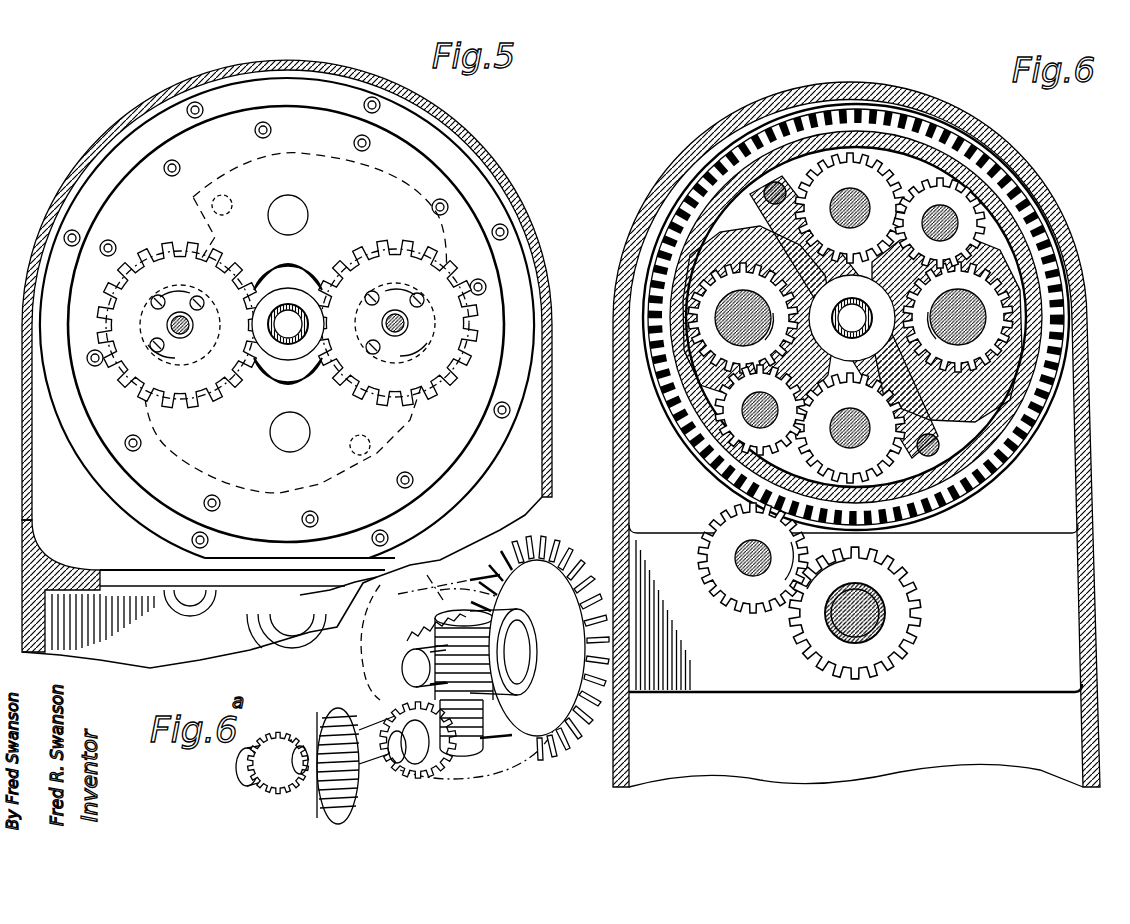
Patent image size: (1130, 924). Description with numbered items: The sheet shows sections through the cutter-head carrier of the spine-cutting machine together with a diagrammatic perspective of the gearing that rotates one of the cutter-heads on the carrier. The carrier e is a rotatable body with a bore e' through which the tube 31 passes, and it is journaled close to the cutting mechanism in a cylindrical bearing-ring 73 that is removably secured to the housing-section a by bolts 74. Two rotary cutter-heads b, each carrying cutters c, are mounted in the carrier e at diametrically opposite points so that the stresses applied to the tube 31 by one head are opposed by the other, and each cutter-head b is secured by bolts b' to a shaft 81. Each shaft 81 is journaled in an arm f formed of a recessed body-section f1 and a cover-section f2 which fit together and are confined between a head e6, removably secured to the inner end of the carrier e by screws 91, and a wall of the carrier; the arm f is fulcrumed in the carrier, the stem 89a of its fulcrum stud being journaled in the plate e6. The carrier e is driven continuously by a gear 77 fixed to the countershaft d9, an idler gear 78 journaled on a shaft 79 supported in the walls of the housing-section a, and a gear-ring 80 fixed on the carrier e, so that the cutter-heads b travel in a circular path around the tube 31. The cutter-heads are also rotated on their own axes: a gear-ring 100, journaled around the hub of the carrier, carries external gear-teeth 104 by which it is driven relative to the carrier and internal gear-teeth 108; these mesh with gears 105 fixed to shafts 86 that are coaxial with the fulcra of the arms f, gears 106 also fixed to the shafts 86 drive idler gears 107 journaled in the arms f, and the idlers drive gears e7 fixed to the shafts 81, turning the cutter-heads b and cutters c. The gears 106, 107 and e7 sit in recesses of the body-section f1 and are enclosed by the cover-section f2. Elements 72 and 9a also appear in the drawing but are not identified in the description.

In FIG. 5, the tube 31 is at (290, 305).
In FIG. 6, the tube 31 is at (855, 300).
In FIG. 5, the screws 72 is at (509, 232).
In FIG. 5, the cylindrical bearing-ring 73 is at (486, 194).
In FIG. 5, the bolts 74 is at (381, 104).
In FIG. 6, the gear 77 is at (900, 632).
In FIG. 6, the idler gear 78 is at (748, 598).
In FIG. 6, the shaft 79 is at (745, 568).
In FIG. 6, the gear-ring 80 is at (745, 125).
In FIG. 6A, the cutter-shaft 81 is at (539, 648).
In FIG. 6, the cutter-shaft 81 is at (985, 320).
In FIG. 6A, the shaft 86 is at (402, 780).
In FIG. 6, the shaft 86 is at (848, 200).
In FIG. 5, the stem 89a is at (302, 223).
In FIG. 5, the screws 91 is at (367, 147).
In FIG. 5, the housing bar 9a is at (122, 570).
In FIG. 6A, the gear-ring 100 is at (346, 802).
In FIG. 6A, the external gear-teeth 104 is at (342, 742).
In FIG. 6A, the gears 105 is at (252, 757).
In FIG. 6A, the gears 106 is at (452, 768).
In FIG. 6, the gears 106 is at (905, 153).
In FIG. 6A, the idler gears 107 is at (478, 752).
In FIG. 6, the idler gears 107 is at (972, 208).
In FIG. 6A, the internal gear-teeth 108 is at (284, 802).
In FIG. 6, the housing-section a is at (832, 92).
In FIG. 5, the cutter-head b is at (287, 307).
In FIG. 6A, the cutter-head b is at (577, 565).
In FIG. 5, the bolts b' is at (287, 339).
In FIG. 5, the cutters c is at (442, 266).
In FIG. 6A, the cutters c is at (585, 600).
In FIG. 5, the cutter-head carrier e is at (287, 364).
In FIG. 6, the cutter-head carrier e is at (869, 317).
In FIG. 5, the bore e' is at (288, 324).
In FIG. 6, the bore e' is at (852, 318).
In FIG. 5, the head e6 is at (440, 177).
In FIG. 6A, the gear e7 is at (414, 640).
In FIG. 6, the gear e7 is at (1020, 272).
In FIG. 5, the arm f is at (302, 157).
In FIG. 6A, the arm f is at (377, 631).
In FIG. 6, the arm f is at (951, 392).
In FIG. 6A, the body-section f1 is at (421, 561).
In FIG. 6A, the cover-section f2 is at (498, 590).
In FIG. 6, the cover-section f2 is at (1005, 385).
In FIG. 6, the countershaft d9 is at (868, 595).